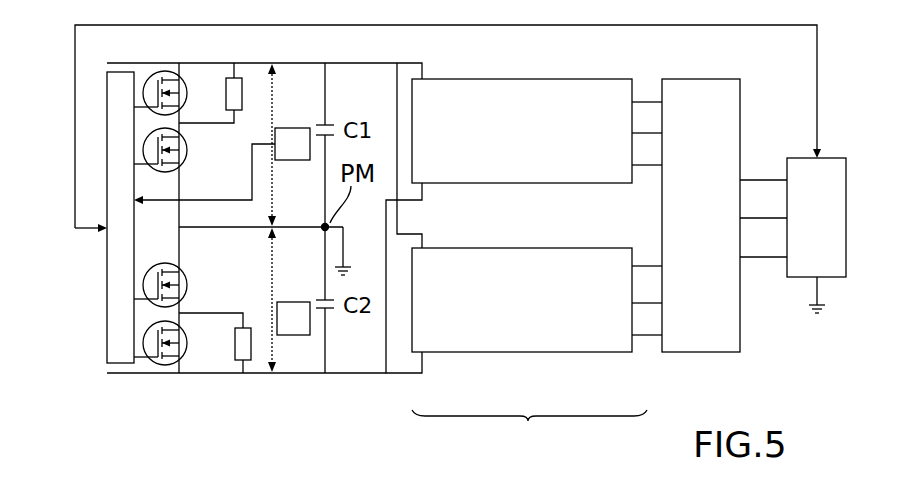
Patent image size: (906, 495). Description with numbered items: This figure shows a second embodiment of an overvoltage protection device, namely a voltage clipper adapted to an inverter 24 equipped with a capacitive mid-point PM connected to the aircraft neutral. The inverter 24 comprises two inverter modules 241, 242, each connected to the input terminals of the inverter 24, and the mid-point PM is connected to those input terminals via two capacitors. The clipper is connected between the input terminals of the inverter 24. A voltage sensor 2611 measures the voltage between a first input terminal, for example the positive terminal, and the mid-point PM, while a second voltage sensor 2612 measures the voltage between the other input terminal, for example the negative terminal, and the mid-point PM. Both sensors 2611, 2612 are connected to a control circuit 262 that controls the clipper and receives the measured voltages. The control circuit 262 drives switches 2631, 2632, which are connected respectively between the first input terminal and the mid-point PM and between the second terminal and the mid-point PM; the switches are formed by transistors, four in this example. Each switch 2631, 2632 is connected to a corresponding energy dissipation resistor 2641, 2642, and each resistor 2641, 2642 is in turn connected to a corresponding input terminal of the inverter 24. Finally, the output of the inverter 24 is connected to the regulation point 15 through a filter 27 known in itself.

The control circuit 262 is at (102, 268).
The switch 2631 is at (189, 142).
The switch 2632 is at (196, 292).
The energy dissipation resistor 2641 is at (226, 92).
The energy dissipation resistor 2642 is at (235, 342).
The voltage sensor 2611 is at (287, 126).
The voltage sensor 2612 is at (297, 336).
The inverter module 241 is at (525, 184).
The inverter module 242 is at (527, 353).
The inverter 24 is at (529, 429).
The filter 27 is at (707, 353).
The regulation point 15 is at (800, 278).